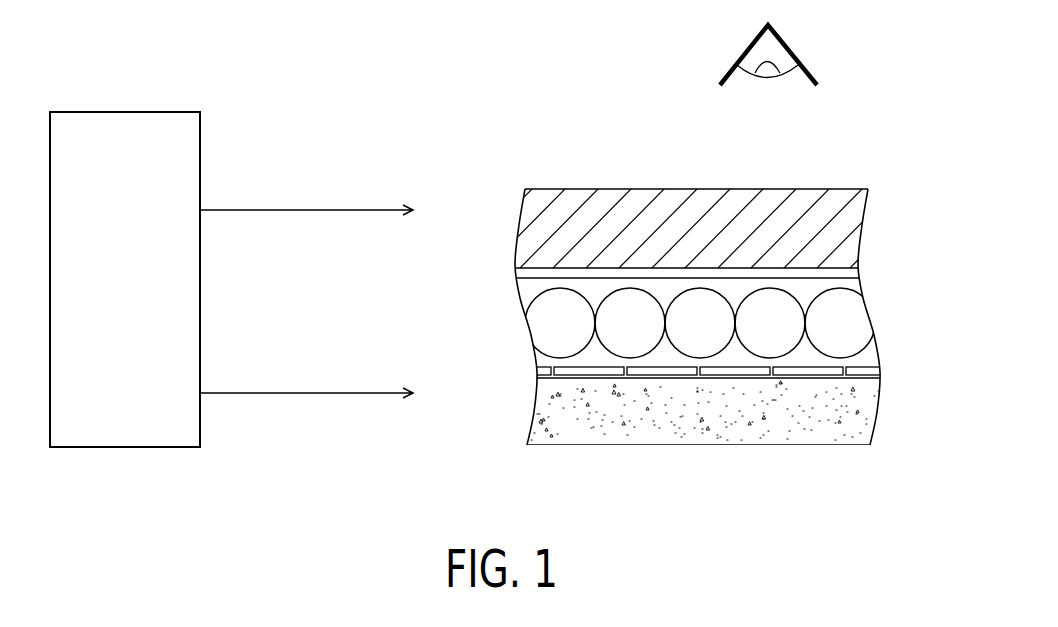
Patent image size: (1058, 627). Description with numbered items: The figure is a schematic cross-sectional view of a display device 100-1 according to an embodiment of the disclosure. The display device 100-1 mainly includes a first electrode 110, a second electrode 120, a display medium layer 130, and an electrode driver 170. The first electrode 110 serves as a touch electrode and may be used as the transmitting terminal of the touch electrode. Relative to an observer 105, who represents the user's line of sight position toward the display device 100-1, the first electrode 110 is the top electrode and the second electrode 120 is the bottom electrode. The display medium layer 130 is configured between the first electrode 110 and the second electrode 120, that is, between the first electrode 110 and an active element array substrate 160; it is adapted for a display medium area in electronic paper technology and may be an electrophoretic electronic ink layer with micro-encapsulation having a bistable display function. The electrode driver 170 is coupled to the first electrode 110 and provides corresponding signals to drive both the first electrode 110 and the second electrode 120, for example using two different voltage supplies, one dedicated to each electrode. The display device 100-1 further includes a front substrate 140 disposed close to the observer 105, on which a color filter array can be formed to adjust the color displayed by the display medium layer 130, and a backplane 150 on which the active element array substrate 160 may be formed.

The electrode driver 170 is at (127, 111).
The observer 105 is at (742, 58).
The front substrate 140 is at (520, 225).
The first electrode 110 is at (518, 272).
The display medium layer 130 is at (540, 327).
The second electrode 120 is at (540, 371).
The backplane 150 is at (537, 412).
The active element array substrate 160 is at (880, 375).
The display device 100-1 is at (940, 482).